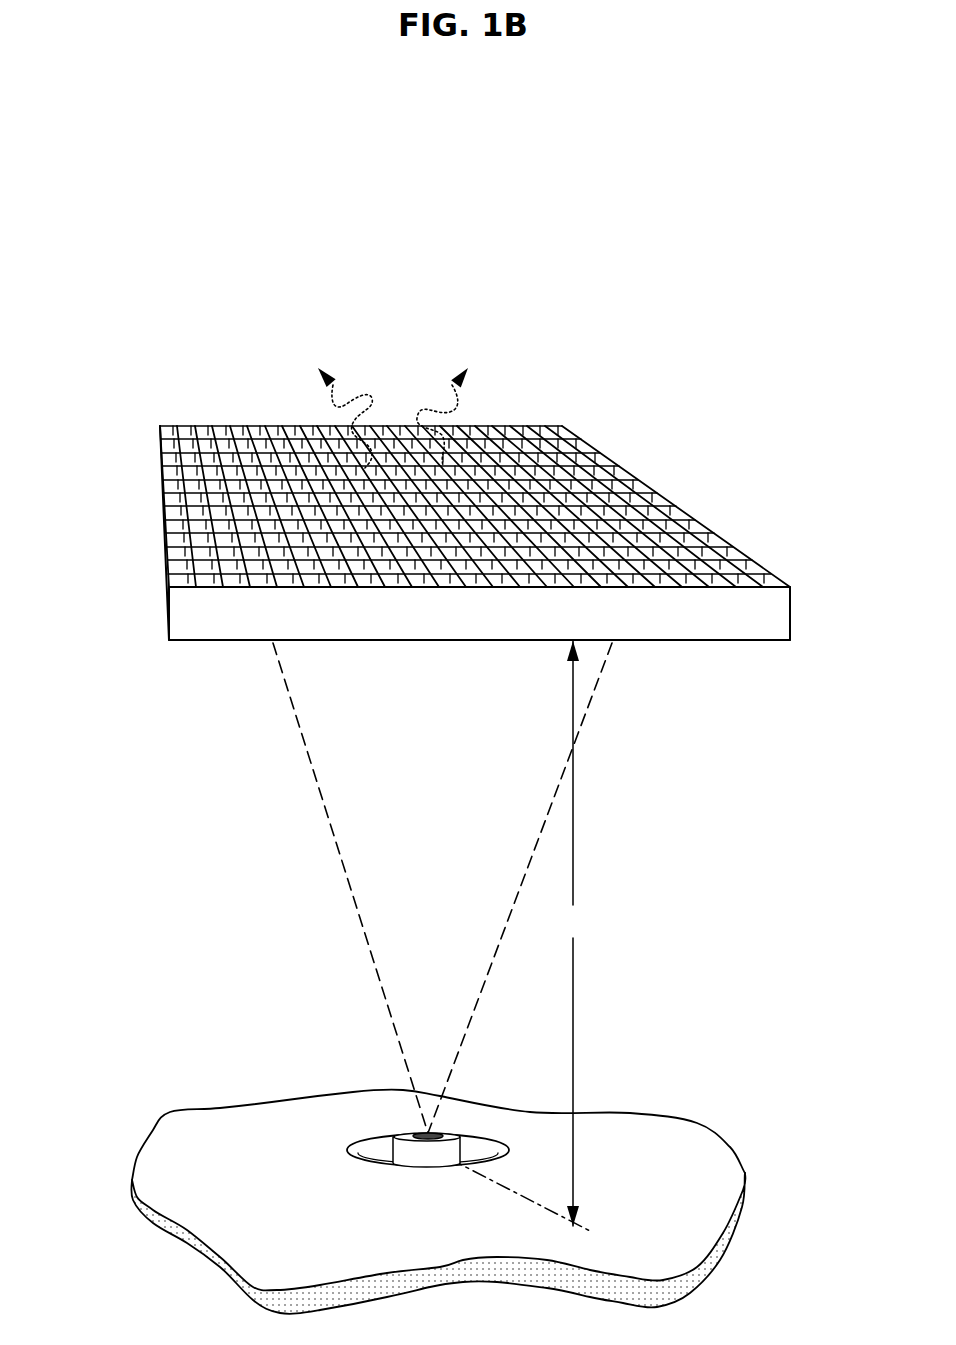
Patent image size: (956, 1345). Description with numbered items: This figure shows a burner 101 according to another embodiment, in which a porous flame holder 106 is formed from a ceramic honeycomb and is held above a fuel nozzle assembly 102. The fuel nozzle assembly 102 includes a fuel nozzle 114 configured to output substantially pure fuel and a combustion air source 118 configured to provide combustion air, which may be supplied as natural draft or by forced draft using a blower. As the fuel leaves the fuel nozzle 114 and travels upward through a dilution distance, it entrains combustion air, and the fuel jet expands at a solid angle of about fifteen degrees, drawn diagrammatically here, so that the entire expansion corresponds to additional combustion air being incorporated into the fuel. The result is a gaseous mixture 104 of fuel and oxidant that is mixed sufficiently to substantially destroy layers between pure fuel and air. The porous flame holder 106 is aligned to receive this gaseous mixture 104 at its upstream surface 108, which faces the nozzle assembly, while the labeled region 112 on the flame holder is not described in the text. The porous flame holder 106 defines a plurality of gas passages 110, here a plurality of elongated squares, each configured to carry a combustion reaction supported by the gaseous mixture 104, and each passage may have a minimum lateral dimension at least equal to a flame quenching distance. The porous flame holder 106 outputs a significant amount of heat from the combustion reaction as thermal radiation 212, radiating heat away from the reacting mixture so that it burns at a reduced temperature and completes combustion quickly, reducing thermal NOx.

The burner 101 is at (648, 220).
The fuel nozzle assembly 102 is at (512, 1198).
The gaseous mixture 104 is at (378, 982).
The porous flame holder 106 is at (747, 557).
The upstream surface 108 is at (311, 641).
The gas passages 110 is at (633, 540).
The light source array 112 is at (198, 435).
The fuel nozzle 114 is at (378, 1158).
The combustion air source 118 is at (350, 1145).
The thermal radiation 212 is at (392, 416).